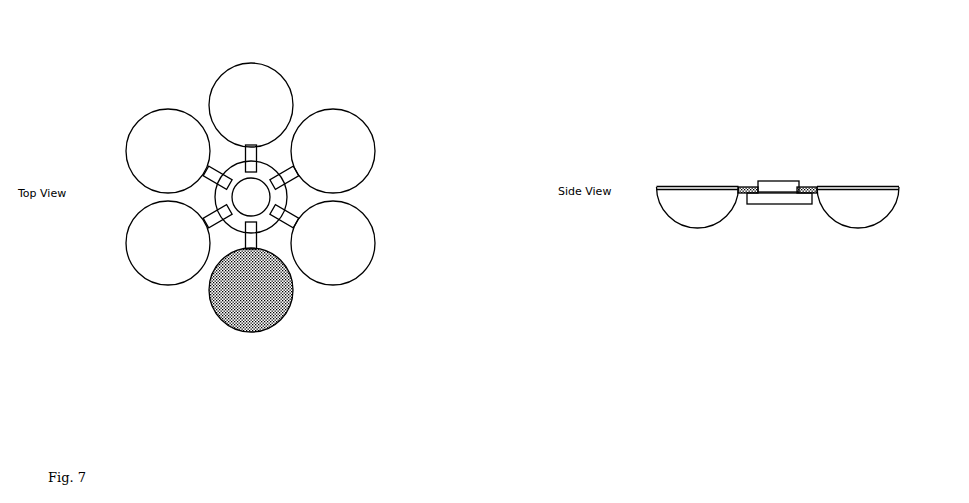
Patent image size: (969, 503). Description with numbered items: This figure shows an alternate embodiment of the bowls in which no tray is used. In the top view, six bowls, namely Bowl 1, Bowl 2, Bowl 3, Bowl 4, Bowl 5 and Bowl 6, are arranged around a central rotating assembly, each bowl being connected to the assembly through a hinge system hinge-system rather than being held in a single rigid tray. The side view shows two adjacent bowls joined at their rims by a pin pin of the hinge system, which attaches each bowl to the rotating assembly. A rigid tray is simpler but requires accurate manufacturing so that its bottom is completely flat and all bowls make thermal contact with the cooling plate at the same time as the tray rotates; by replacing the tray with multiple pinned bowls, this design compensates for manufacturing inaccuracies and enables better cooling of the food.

The bowl 1 is at (251, 290).
The bowl 2 is at (168, 243).
The bowl 3 is at (168, 151).
The bowl 4 is at (251, 105).
The bowl 5 is at (333, 151).
The bowl 6 is at (333, 243).
The hinge system hinge-system is at (272, 163).
The element pin is at (813, 188).